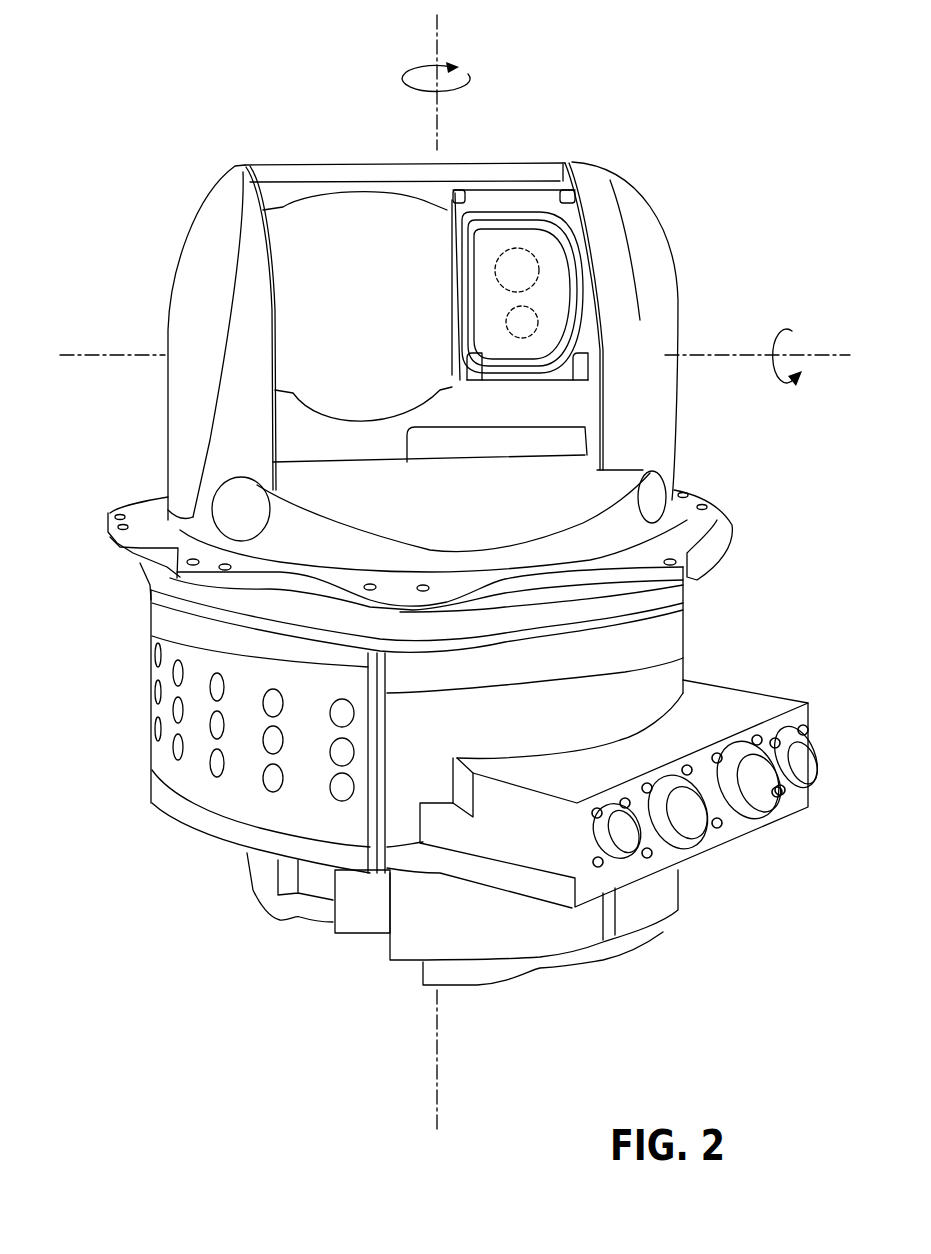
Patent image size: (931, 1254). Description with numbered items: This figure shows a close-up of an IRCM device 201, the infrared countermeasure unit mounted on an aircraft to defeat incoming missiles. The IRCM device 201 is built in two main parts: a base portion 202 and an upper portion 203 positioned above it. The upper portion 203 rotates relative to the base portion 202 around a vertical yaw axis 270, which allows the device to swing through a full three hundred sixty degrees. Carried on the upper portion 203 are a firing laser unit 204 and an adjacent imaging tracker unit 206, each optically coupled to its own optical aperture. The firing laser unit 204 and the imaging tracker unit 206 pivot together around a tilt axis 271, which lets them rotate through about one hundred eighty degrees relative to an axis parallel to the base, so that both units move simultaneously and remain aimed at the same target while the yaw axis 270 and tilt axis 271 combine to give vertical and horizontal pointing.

The IRCM device 201 is at (210, 213).
The base portion 202 is at (700, 632).
The upper portion 203 is at (650, 405).
The firing laser unit 204 is at (543, 320).
The imaging tracker unit 206 is at (540, 267).
The yaw axis 270 is at (440, 43).
The tilt axis 271 is at (827, 357).